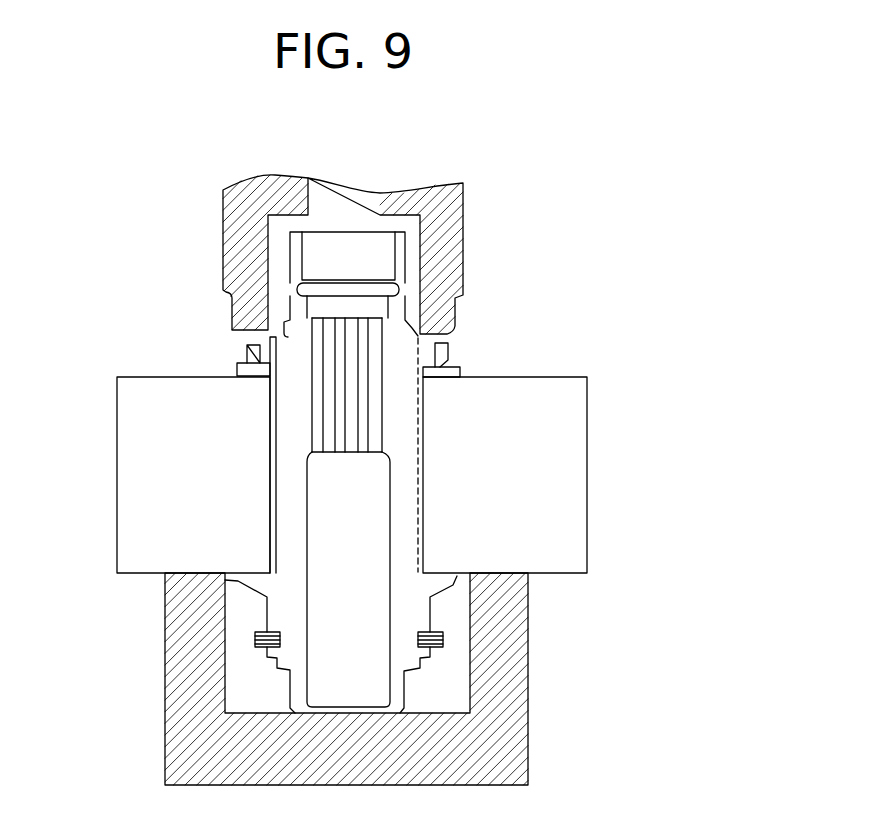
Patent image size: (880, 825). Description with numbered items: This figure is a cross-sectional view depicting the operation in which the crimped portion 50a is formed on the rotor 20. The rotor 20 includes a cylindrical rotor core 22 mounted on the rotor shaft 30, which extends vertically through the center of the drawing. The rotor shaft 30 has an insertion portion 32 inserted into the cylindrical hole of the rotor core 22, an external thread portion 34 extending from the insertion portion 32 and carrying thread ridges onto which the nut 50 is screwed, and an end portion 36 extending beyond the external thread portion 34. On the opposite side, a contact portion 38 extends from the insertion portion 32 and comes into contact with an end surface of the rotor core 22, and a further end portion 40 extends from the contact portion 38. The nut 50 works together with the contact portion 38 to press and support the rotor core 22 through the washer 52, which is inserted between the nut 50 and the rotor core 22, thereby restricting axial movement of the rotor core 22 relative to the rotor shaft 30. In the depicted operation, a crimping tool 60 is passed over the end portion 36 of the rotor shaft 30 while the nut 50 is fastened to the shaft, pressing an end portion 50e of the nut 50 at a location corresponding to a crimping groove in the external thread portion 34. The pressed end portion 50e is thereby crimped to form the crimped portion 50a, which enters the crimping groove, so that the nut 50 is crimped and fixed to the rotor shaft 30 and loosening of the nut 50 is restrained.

The rotor 20 is at (594, 290).
The rotor core 22 is at (587, 490).
The rotor shaft 30 is at (400, 263).
The insertion portion 32 is at (270, 513).
The external thread portion 34 is at (270, 385).
The end portion 36 is at (290, 249).
The contact portion 38 is at (238, 580).
The end portion 40 is at (267, 605).
The nut 50 is at (247, 351).
The crimped portion 50a is at (452, 333).
The end portion 50e is at (237, 331).
The washer 52 is at (457, 373).
The crimping tool 60 is at (508, 157).